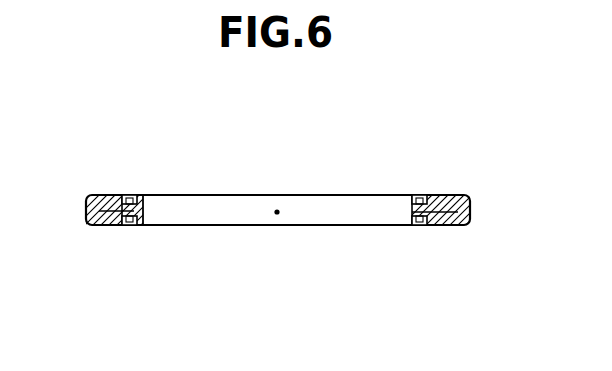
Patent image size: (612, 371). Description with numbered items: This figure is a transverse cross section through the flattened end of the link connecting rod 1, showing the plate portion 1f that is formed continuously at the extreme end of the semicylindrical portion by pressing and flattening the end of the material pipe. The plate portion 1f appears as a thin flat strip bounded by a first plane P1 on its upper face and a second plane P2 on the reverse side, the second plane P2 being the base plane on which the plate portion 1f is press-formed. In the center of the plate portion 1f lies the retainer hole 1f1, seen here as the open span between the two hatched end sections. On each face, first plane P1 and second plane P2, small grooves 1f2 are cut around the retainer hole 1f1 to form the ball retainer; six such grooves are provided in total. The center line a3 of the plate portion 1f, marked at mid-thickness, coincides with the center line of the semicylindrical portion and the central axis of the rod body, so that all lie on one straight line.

The link connecting rod 1 is at (415, 166).
The plate portion 1f is at (153, 195).
The retainer hole 1f1 is at (375, 213).
The grooves 1f2 is at (422, 195).
The first plane P1 is at (112, 195).
The second plane P2 is at (437, 225).
The center line a3 is at (277, 212).